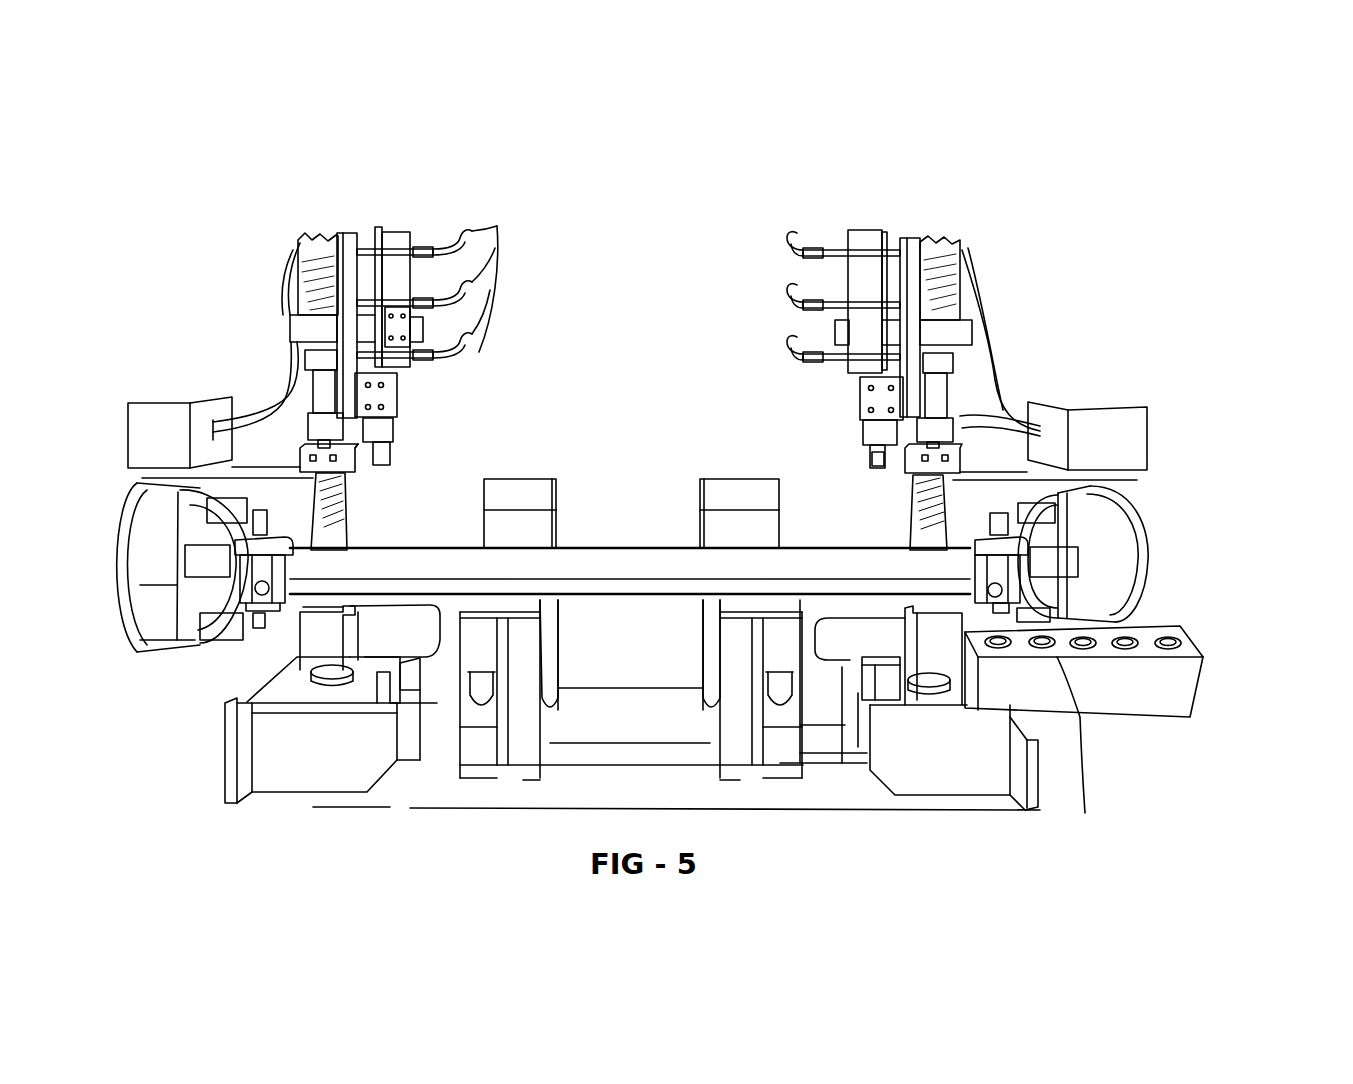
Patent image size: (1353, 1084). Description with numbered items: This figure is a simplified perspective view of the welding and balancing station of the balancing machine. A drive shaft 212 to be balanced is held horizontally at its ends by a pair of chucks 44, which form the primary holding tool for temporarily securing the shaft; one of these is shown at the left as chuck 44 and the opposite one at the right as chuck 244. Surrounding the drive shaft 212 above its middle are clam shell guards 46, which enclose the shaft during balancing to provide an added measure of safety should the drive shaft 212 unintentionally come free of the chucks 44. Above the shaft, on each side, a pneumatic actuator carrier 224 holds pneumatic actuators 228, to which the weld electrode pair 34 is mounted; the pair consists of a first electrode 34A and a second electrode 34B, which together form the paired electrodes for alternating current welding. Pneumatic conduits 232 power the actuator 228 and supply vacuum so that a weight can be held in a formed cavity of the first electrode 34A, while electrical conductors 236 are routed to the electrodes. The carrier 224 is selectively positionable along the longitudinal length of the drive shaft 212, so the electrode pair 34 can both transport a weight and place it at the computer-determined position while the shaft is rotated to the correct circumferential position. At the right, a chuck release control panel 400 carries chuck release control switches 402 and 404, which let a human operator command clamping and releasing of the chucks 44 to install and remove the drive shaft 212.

The drive shaft 212 is at (633, 562).
The clam shell guards 46 is at (724, 480).
The chuck release control panel 400 is at (1165, 703).
The chuck release control switch 402 is at (1094, 762).
The chuck release control switch 404 is at (1190, 640).
The pneumatic actuator 228 is at (323, 252).
The pneumatic actuator carrier 224 is at (393, 403).
The weld electrode pair 34 is at (380, 470).
The first electrode 34A is at (957, 458).
The second electrode 34B is at (878, 462).
The pneumatic conduits 232 is at (498, 236).
The electrical conductors 236 is at (268, 382).
The chuck 44 is at (223, 632).
The right brake drum hub 244 is at (1060, 560).